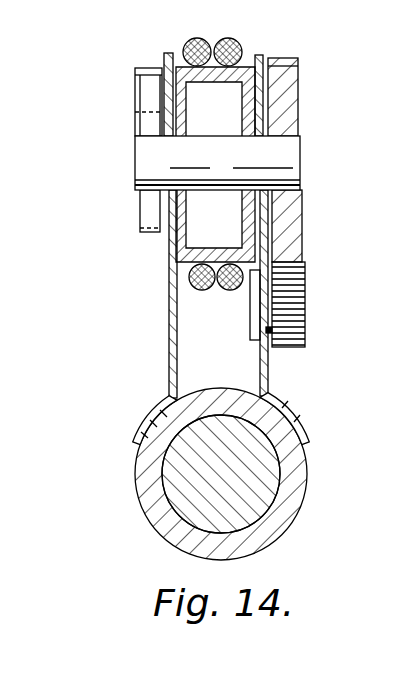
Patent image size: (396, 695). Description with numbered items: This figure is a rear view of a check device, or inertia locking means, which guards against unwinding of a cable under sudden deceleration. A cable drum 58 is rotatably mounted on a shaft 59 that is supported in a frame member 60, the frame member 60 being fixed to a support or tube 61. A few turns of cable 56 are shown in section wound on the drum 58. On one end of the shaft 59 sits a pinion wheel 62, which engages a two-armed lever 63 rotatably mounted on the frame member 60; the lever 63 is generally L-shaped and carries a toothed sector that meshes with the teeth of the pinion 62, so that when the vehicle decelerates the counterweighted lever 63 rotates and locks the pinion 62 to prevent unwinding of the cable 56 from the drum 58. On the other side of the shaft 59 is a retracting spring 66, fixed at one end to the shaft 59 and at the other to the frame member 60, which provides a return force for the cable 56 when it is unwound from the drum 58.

The cable 56 is at (189, 280).
The cable drum 58 is at (180, 256).
The shaft 59 is at (285, 156).
The frame member 60 is at (172, 330).
The support or tube 61 is at (136, 457).
The pinion wheel 62 is at (288, 96).
The two-armed lever 63 is at (292, 302).
The retracting spring 66 is at (140, 96).